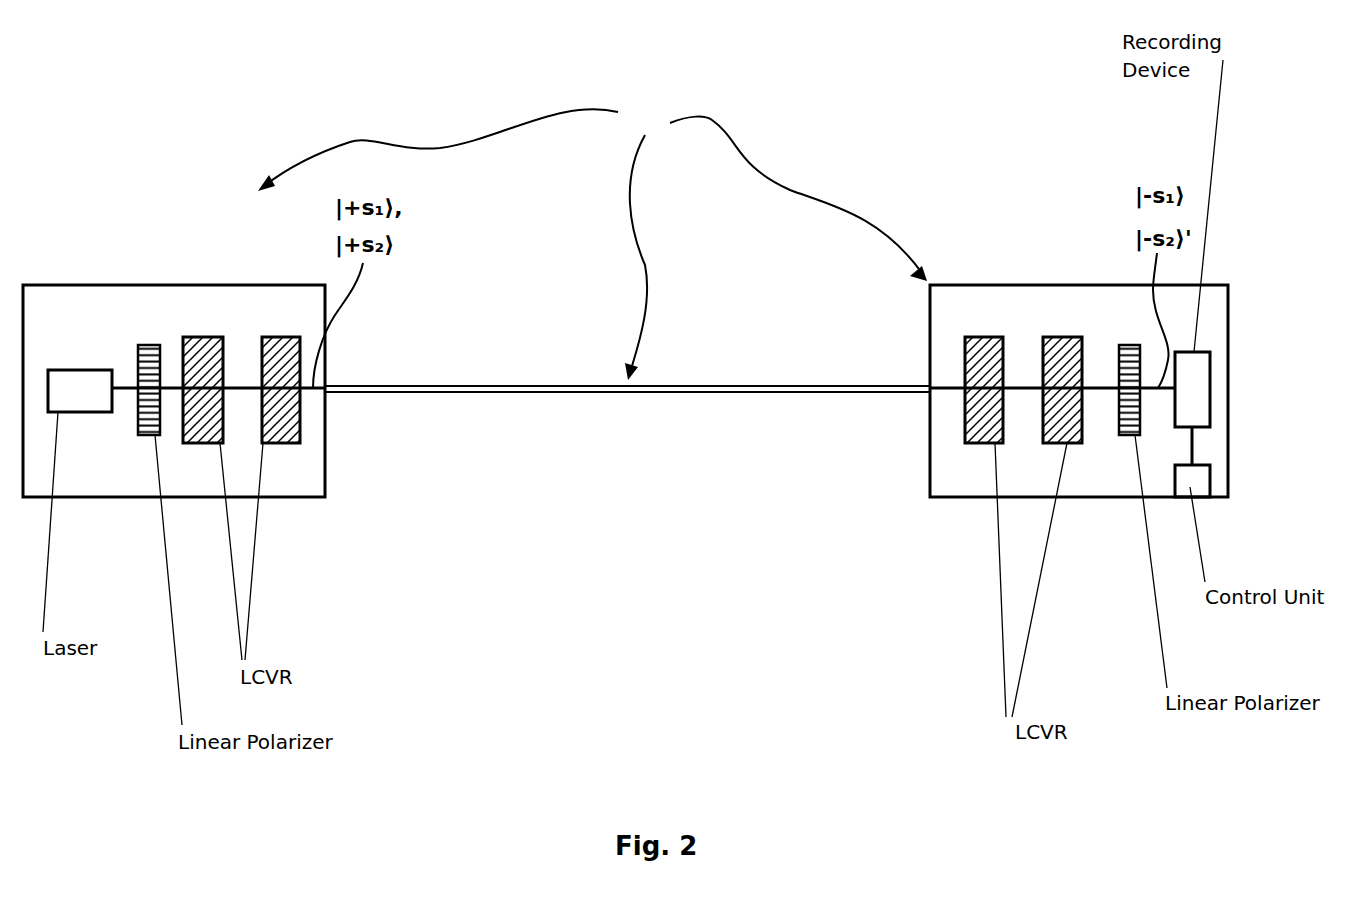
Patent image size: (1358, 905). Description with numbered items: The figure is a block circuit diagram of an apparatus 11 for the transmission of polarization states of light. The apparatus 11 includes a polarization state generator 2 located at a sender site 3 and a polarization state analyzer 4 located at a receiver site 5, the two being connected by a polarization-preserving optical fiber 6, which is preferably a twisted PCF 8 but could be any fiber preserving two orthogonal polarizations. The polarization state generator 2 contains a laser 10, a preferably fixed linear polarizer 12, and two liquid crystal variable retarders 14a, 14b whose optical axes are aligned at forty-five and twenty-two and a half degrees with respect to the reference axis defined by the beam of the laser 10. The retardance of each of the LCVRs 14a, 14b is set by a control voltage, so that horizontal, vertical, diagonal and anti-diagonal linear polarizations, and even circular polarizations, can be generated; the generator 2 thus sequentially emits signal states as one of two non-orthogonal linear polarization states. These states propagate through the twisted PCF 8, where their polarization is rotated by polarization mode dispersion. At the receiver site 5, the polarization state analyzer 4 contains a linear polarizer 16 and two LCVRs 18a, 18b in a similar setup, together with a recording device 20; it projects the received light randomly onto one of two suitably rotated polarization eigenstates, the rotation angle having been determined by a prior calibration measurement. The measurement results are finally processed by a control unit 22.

The polarization state generator 2 is at (55, 284).
The sender site 3 is at (190, 270).
The polarization state analyzer 4 is at (1055, 284).
The receiver site 5 is at (1224, 264).
The optical fiber 6 is at (628, 395).
The twisted PCF 8 is at (628, 395).
The laser 10 is at (75, 412).
The apparatus 11 is at (592, 241).
The linear polarizer 12 is at (142, 435).
The liquid crystal variable retarder 14a is at (208, 443).
The liquid crystal variable retarder 14b is at (278, 443).
The linear polarizer 16 is at (1125, 435).
The liquid crystal variable retarder 18a is at (975, 443).
The liquid crystal variable retarder 18b is at (1053, 443).
The recording device 20 is at (1210, 370).
The control unit 22 is at (1210, 480).